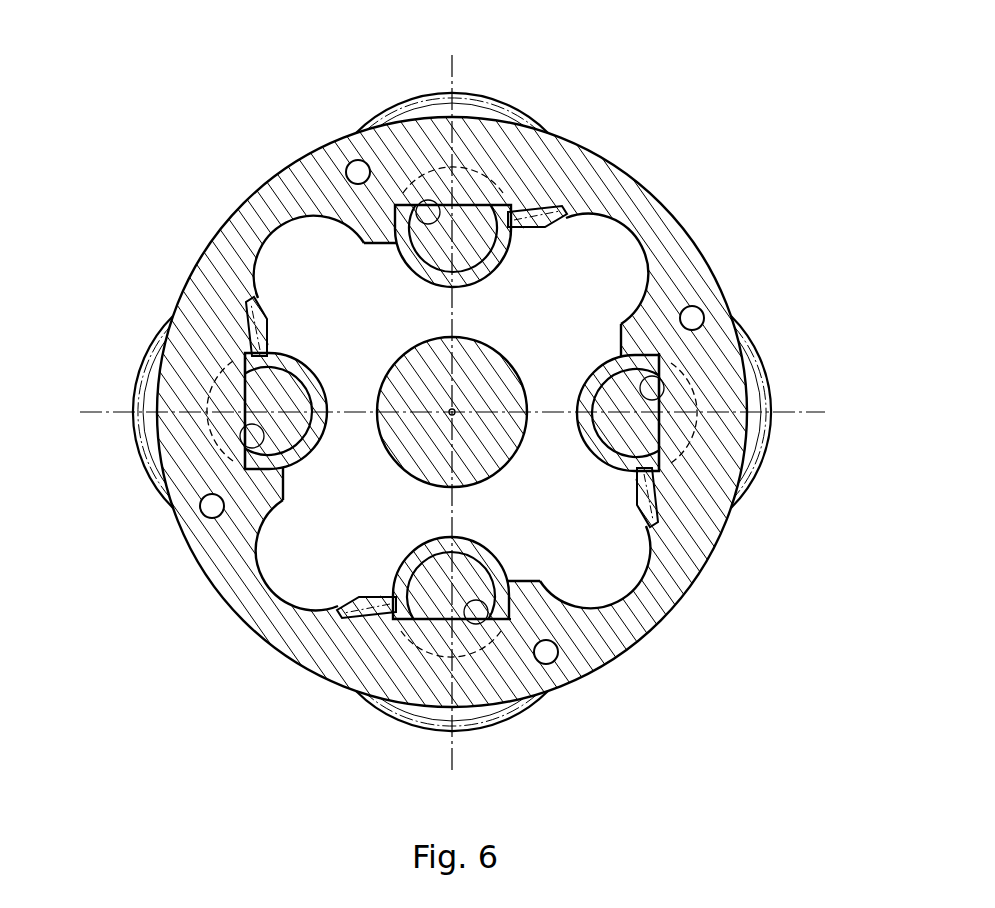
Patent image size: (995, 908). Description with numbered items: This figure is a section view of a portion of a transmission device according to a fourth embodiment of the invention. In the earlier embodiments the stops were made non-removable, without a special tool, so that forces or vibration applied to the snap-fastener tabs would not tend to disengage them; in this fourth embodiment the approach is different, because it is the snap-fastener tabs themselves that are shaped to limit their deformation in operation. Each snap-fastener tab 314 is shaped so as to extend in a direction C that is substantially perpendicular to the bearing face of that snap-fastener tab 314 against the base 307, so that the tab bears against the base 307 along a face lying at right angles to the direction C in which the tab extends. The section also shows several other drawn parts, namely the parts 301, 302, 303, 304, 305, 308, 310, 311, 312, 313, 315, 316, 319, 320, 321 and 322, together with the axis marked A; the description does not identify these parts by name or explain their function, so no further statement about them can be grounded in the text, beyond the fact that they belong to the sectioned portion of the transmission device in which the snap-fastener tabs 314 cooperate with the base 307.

The roller clutch assembly 301 is at (185, 152).
The first spring lobe 302 is at (425, 96).
The second spring lobe 303 is at (770, 380).
The third spring lobe 304 is at (482, 730).
The fourth spring lobe 305 is at (140, 440).
The base 307 is at (312, 240).
The hub shaft 308 is at (412, 478).
The first roller position 310 is at (468, 217).
The second roller position 311 is at (655, 446).
The third roller position 312 is at (437, 607).
The fourth roller position 313 is at (262, 397).
The snap-fastener tab 314 is at (620, 203).
The roller 315 is at (398, 205).
The flat contact surface 316 is at (560, 205).
The spring tab axis 319 is at (612, 213).
The roller pocket 320 is at (380, 247).
The spring tab 321 is at (540, 228).
The recess 322 is at (285, 222).
The axis A is at (457, 405).
The direction C is at (505, 258).